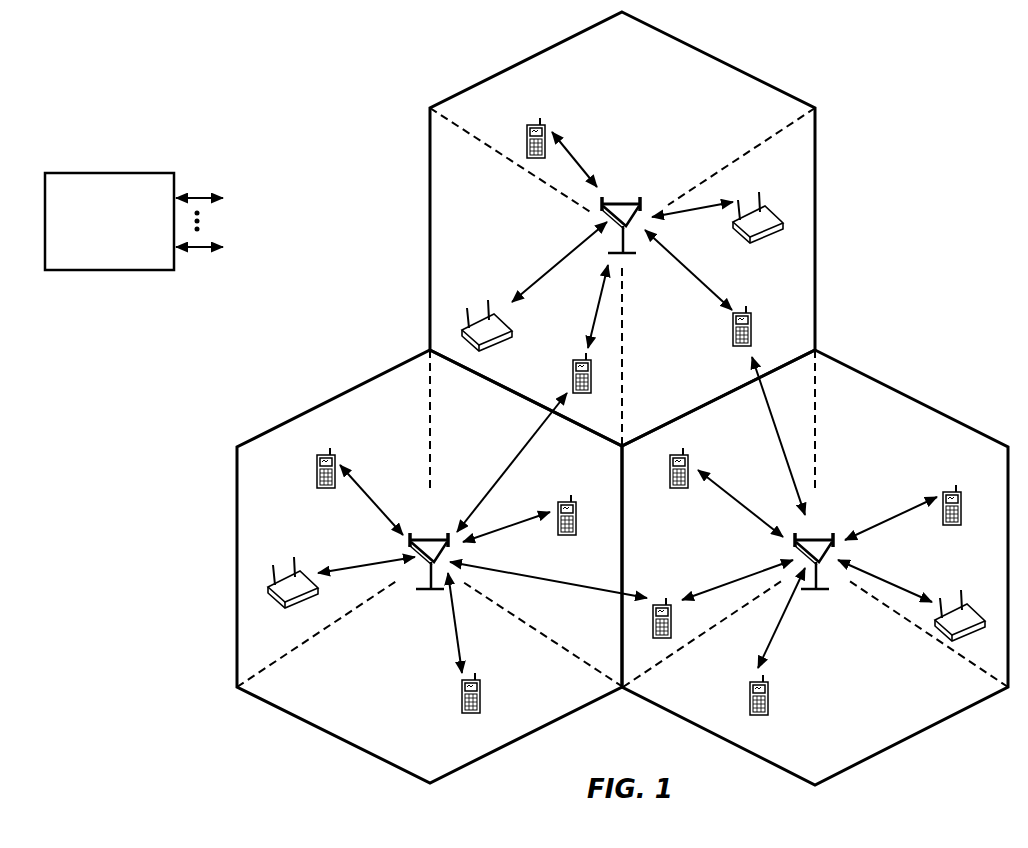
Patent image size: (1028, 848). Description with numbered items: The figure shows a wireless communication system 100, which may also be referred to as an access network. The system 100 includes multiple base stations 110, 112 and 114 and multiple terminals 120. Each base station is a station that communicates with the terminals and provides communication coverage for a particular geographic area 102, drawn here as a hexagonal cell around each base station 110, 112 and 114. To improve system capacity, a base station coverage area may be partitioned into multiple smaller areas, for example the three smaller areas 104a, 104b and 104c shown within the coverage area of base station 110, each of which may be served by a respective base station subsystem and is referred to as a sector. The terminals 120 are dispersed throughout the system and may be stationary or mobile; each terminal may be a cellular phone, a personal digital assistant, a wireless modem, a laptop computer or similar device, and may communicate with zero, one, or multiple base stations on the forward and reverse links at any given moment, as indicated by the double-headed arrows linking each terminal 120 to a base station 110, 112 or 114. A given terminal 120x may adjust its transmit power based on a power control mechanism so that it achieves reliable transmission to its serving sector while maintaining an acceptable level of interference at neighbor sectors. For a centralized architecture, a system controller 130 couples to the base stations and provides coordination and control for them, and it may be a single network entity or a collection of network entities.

The wireless communication system 100 is at (948, 75).
The geographic area 102 is at (721, 58).
The smaller area 104a is at (645, 67).
The smaller area 104b is at (485, 204).
The smaller area 104c is at (708, 389).
The base station 110 is at (624, 201).
The base station 112 is at (430, 538).
The base station 114 is at (818, 538).
The terminal 120 is at (527, 133).
The given terminal 120x is at (573, 375).
The system controller 130 is at (104, 173).